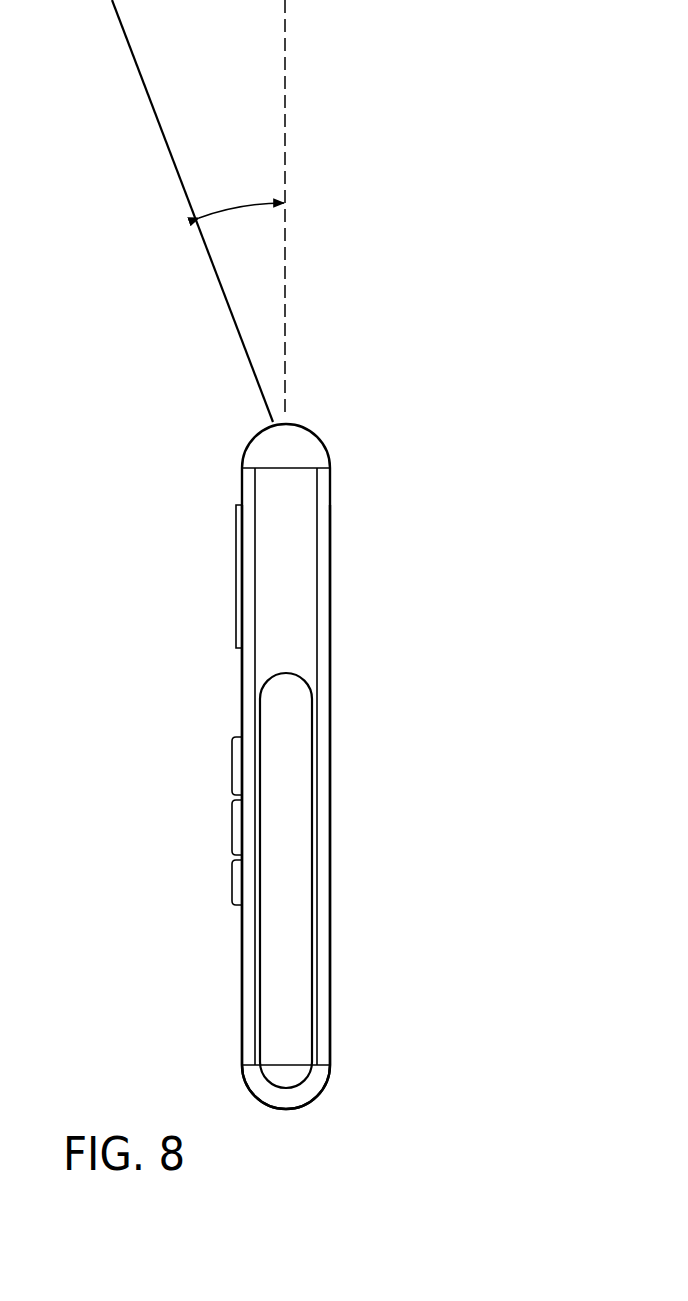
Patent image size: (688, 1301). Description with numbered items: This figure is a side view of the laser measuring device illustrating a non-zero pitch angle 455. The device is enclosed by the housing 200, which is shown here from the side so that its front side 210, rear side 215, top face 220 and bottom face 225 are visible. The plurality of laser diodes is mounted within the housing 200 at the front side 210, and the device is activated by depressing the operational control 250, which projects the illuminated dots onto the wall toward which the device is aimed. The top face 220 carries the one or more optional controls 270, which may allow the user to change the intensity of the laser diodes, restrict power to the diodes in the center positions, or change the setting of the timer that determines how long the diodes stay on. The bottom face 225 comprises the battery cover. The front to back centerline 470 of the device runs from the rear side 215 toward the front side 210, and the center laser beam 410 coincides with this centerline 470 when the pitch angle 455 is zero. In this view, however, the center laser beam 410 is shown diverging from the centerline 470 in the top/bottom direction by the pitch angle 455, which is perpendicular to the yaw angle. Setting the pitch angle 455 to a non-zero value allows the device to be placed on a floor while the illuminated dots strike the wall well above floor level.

The housing 200 is at (329, 458).
The front side 210 is at (330, 322).
The rear side 215 is at (300, 1148).
The top face 220 is at (177, 684).
The bottom face 225 is at (384, 857).
The operational control 250 is at (235, 570).
The optional controls 270 is at (208, 733).
The center laser beam 410 is at (229, 311).
The pitch angle 455 is at (238, 203).
The front to back centerline 470 is at (287, 47).